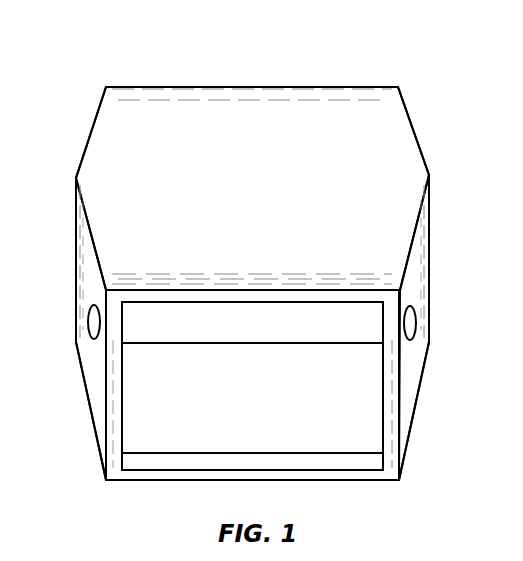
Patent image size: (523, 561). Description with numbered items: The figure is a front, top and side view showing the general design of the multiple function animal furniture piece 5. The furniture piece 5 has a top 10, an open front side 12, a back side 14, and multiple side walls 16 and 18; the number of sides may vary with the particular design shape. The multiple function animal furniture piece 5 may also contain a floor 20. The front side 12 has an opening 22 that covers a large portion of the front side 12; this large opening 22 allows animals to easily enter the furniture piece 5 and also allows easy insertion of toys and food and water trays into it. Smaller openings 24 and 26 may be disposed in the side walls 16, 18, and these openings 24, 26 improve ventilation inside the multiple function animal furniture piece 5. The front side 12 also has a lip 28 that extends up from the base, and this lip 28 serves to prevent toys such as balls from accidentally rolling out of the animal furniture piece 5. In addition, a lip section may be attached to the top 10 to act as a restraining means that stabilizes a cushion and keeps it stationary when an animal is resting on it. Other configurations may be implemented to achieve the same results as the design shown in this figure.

The multiple function animal furniture piece 5 is at (104, 44).
The top 10 is at (259, 202).
The open front side 12 is at (388, 458).
The back side 14 is at (259, 332).
The side wall 16 is at (417, 258).
The side wall 18 is at (80, 240).
The floor 20 is at (259, 414).
The opening 22 is at (140, 423).
The smaller opening 24 is at (92, 323).
The smaller opening 26 is at (412, 323).
The lip 28 is at (128, 462).